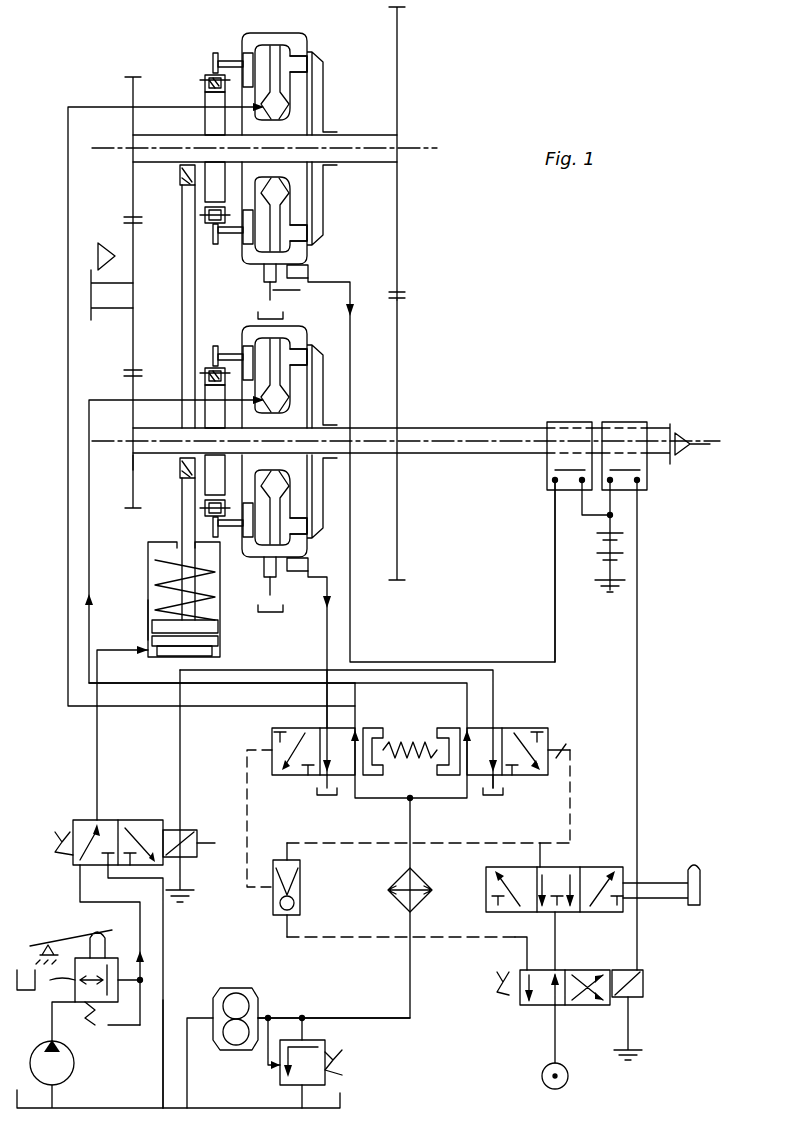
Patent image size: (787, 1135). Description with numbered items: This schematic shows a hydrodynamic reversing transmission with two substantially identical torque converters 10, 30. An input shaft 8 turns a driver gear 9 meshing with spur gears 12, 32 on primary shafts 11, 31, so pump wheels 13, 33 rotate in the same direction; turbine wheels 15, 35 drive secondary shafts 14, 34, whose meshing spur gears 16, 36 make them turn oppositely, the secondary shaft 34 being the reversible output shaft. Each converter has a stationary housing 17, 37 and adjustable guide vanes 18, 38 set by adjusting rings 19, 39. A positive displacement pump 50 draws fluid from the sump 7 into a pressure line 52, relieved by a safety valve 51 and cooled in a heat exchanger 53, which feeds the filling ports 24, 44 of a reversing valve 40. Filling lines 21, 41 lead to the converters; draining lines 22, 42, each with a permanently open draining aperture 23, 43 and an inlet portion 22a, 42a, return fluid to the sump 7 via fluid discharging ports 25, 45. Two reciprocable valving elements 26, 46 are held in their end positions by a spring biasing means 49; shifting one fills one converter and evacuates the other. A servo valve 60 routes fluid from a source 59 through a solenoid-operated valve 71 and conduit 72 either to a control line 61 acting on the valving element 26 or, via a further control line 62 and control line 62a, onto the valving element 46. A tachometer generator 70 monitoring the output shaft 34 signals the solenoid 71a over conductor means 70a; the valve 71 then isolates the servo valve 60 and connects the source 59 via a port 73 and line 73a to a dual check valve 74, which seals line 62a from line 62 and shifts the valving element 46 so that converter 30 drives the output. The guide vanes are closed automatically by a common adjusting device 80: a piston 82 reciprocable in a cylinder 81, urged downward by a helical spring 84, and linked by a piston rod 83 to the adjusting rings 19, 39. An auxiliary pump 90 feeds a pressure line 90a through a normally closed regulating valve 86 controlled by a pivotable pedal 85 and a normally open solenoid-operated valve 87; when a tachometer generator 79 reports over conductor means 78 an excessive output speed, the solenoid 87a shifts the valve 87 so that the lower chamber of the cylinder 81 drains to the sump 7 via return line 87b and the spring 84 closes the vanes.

The sump 7 is at (340, 1091).
The input shaft 8 is at (108, 308).
The driver gear 9 is at (133, 258).
The hydrodynamic torque converter 10 is at (270, 132).
The primary shaft 11 is at (160, 165).
The spur gear 12 is at (130, 160).
The pump wheel 13 is at (300, 100).
The secondary shaft 14 is at (370, 130).
The turbine wheel 15 is at (300, 62).
The spur gear 16 is at (397, 57).
The stationary housing 17 is at (250, 40).
The adjustable guide vanes 18 is at (240, 55).
The adjusting ring 19 is at (205, 82).
The filling line 21 is at (192, 404).
The draining line 22 is at (323, 279).
The first clutch drain port 22a is at (325, 265).
The draining aperture 23 is at (262, 273).
The filling port 24 is at (291, 744).
The fluid discharging port 25 is at (500, 788).
The valving element 26 is at (572, 748).
The hydrodynamic torque converter 30 is at (287, 422).
The primary shaft 31 is at (160, 458).
The spur gear 32 is at (132, 449).
The pump wheel 33 is at (317, 441).
The secondary shaft 34 is at (439, 421).
The turbine wheel 35 is at (334, 439).
The spur gear 36 is at (400, 348).
The stationary housing 37 is at (275, 426).
The adjustable guide vanes 38 is at (234, 412).
The adjusting ring 39 is at (212, 418).
The reversing valve 40 is at (548, 735).
The filling line 41 is at (89, 560).
The draining line 42 is at (328, 567).
The inlet portion 42a is at (309, 558).
The draining aperture 43 is at (268, 573).
The filling port 44 is at (440, 793).
The fluid discharging port 45 is at (322, 784).
The valving element 46 is at (375, 727).
The biasing means 49 is at (411, 748).
The positive displacement pump 50 is at (220, 991).
The safety valve 51 is at (327, 1050).
The pressure line 52 is at (406, 1018).
The heat exchanger 53 is at (425, 880).
The source of pressurized fluid 59 is at (547, 1066).
The servo valve 60 is at (628, 905).
The control line 61 is at (576, 796).
The control line 62 is at (362, 848).
The pressure line 62a is at (247, 770).
The tachometer generator 70 is at (620, 418).
The conductor means 70a is at (637, 638).
The solenoid-operated valve 71 is at (585, 1005).
The solenoid 71a is at (645, 980).
The conduit 72 is at (555, 948).
The port 73 is at (527, 953).
The line 73a is at (355, 940).
The dual check valve 74 is at (300, 905).
The conductor means 78 is at (555, 568).
The tachometer generator 79 is at (565, 418).
The adjusting device 80 is at (181, 576).
The cylinder 81 is at (148, 615).
The piston 82 is at (200, 643).
The piston rod 83 is at (182, 318).
The helical spring 84 is at (205, 596).
The pivotable pedal 85 is at (78, 930).
The regulating valve 86 is at (52, 993).
The solenoid-operated valve 87 is at (130, 820).
The solenoid 87a is at (215, 843).
The return line 87b is at (165, 933).
The auxiliary pump 90 is at (77, 1072).
The pressure line 90a is at (97, 768).